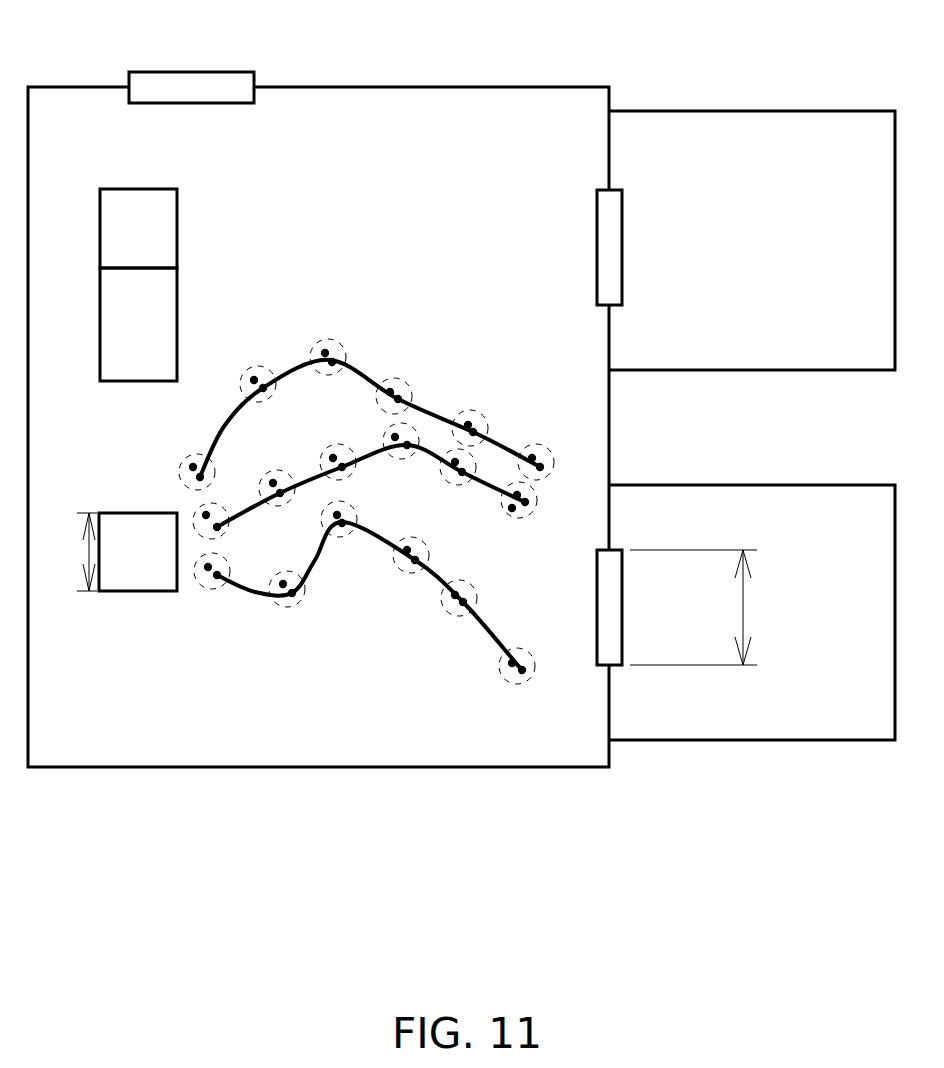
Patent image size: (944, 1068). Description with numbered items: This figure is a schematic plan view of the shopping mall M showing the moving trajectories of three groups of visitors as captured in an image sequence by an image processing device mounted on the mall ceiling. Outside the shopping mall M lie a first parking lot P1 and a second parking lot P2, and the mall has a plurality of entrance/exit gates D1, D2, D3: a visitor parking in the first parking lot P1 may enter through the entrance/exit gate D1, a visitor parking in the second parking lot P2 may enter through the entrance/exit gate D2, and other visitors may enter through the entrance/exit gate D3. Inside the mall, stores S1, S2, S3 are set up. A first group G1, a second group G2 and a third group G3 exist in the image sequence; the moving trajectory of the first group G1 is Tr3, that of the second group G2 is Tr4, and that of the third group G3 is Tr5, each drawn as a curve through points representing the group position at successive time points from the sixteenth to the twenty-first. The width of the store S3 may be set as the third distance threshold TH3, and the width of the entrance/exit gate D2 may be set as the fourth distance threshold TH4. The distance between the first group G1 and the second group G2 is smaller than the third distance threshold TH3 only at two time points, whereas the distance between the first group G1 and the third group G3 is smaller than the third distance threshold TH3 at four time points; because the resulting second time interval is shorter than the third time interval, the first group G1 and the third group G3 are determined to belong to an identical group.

The shopping mall M is at (318, 427).
The entrance/exit gate D3 is at (191, 70).
The entrance/exit gate D1 is at (631, 247).
The entrance/exit gate D2 is at (629, 607).
The first parking lot P1 is at (752, 240).
The second parking lot P2 is at (752, 612).
The store S1 is at (138, 228).
The store S2 is at (138, 324).
The store S3 is at (138, 552).
The third distance threshold TH3 is at (65, 552).
The fourth distance threshold TH4 is at (716, 607).
The first group G1 is at (535, 498).
The second group G2 is at (543, 660).
The third group G3 is at (557, 460).
The moving trajectory Tr3 is at (367, 486).
The moving trajectory Tr4 is at (369, 604).
The moving trajectory Tr5 is at (354, 418).